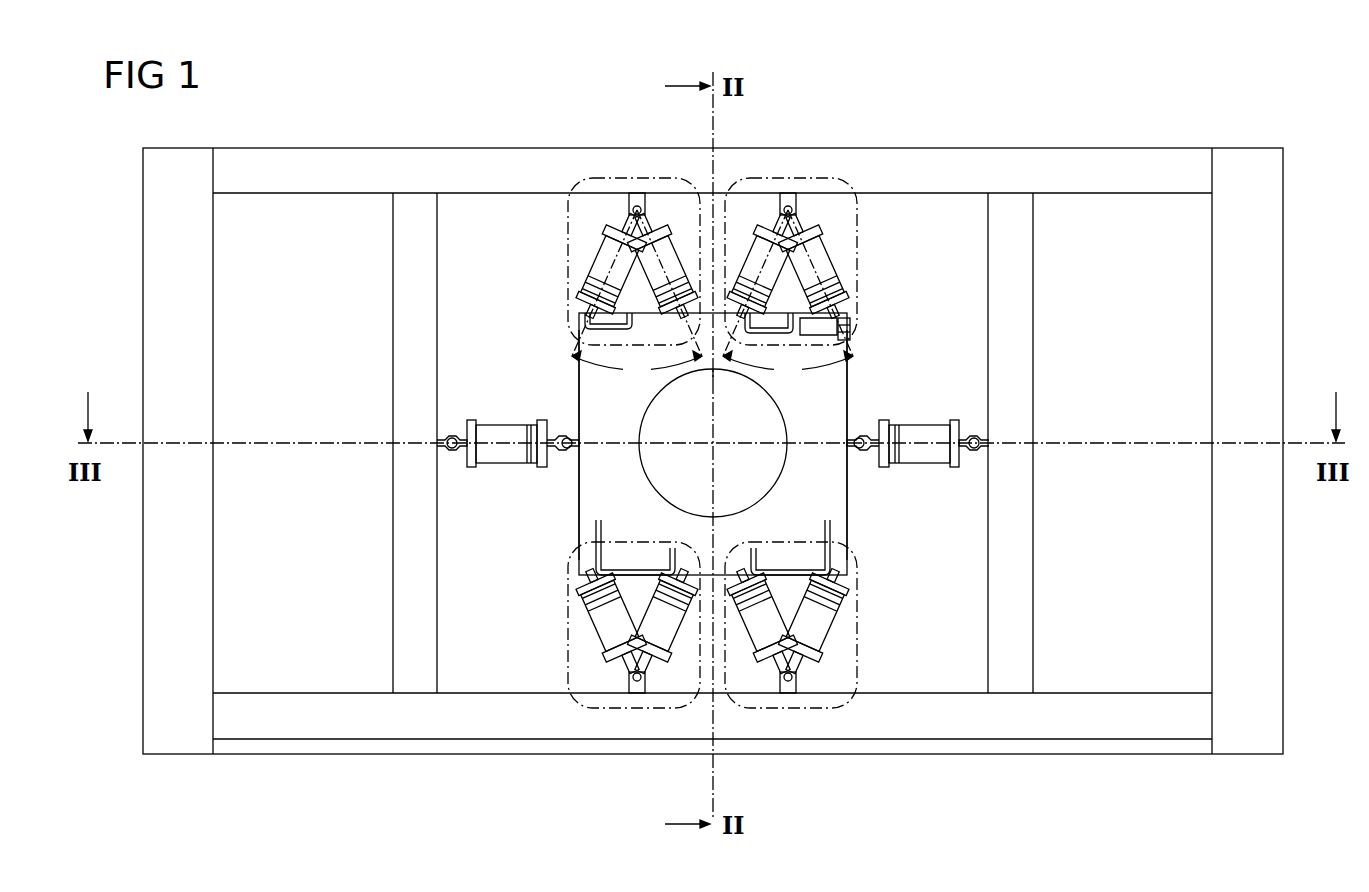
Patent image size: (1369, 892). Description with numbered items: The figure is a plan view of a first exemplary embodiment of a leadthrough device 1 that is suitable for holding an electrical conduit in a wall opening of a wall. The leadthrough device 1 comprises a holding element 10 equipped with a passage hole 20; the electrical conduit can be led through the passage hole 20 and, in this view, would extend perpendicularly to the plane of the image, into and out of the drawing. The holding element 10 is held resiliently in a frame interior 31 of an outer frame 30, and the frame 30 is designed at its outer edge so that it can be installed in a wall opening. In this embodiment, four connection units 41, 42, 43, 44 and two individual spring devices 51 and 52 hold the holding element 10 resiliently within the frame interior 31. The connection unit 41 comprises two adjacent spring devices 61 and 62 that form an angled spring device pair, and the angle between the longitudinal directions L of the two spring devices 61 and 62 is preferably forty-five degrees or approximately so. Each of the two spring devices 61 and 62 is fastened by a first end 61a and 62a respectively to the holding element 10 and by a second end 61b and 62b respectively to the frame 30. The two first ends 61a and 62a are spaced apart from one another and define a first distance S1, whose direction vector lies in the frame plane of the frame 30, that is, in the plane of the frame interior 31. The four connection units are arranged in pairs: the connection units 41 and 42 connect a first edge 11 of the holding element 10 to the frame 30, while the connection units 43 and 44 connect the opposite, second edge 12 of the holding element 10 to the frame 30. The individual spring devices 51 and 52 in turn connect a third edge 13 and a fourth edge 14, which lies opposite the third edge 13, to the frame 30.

The leadthrough device 1 is at (352, 106).
The holding element 10 is at (833, 498).
The first edge 11 is at (585, 318).
The second edge 12 is at (585, 575).
The third edge 13 is at (578, 470).
The fourth edge 14 is at (850, 478).
The passage hole 20 is at (672, 487).
The outer frame 30 is at (1043, 157).
The frame interior 31 is at (960, 333).
The connection unit 41 is at (808, 265).
The connection unit 42 is at (568, 210).
The connection unit 43 is at (815, 708).
The connection unit 44 is at (610, 708).
The individual spring device 51 is at (505, 430).
The individual spring device 52 is at (918, 432).
The spring device 61 is at (840, 243).
The first end 61a is at (845, 305).
The second end 61b is at (844, 157).
The spring device 62 is at (762, 214).
The first end 62a is at (715, 375).
The second end 62b is at (844, 157).
The longitudinal direction L is at (819, 234).
The first distance S1 is at (850, 330).